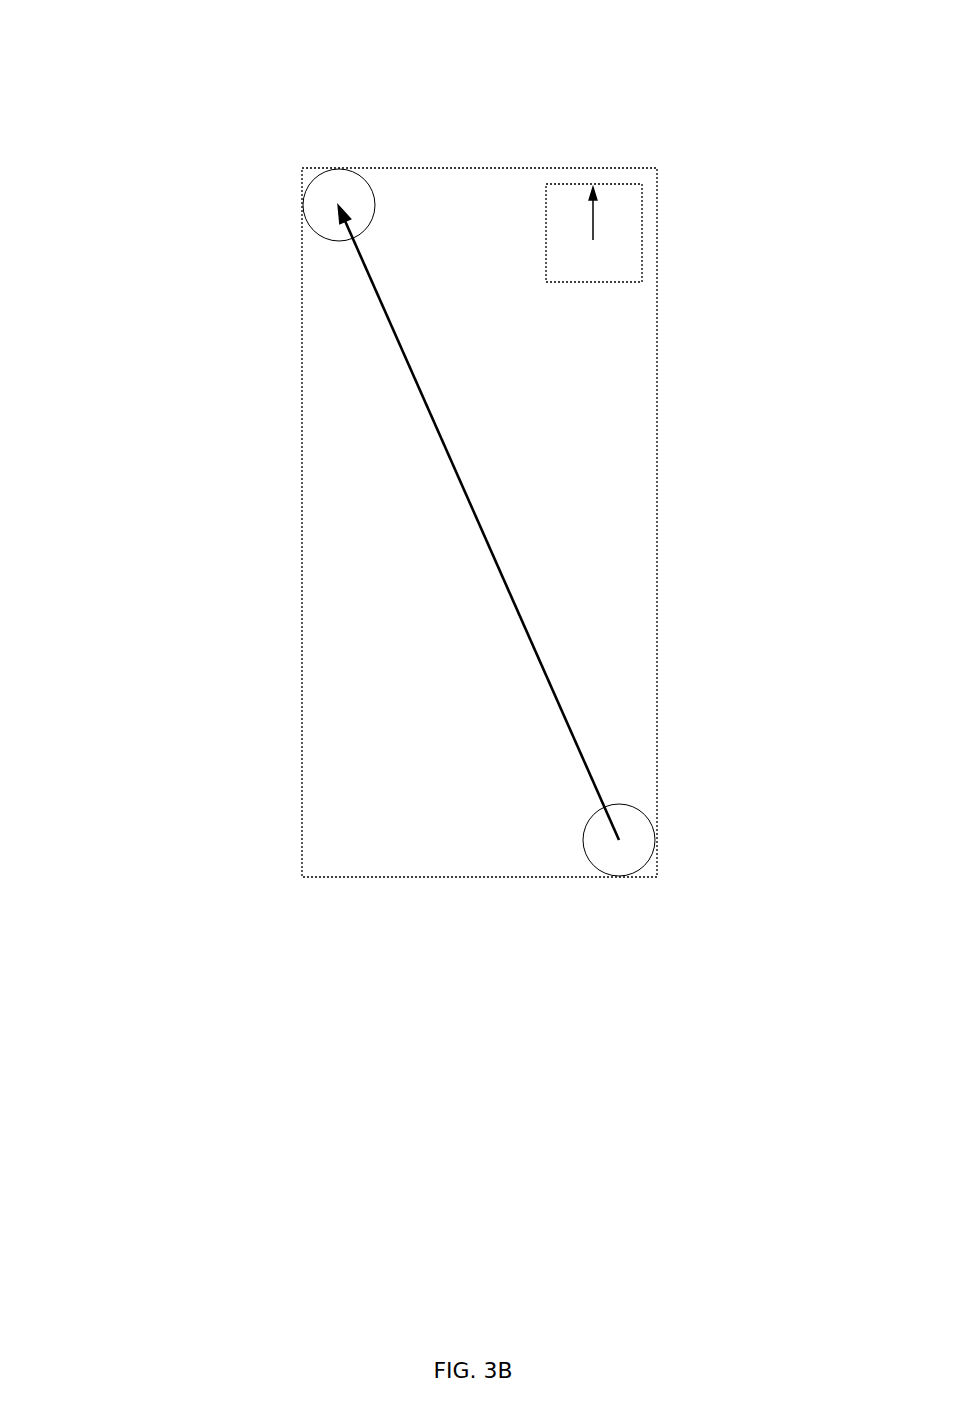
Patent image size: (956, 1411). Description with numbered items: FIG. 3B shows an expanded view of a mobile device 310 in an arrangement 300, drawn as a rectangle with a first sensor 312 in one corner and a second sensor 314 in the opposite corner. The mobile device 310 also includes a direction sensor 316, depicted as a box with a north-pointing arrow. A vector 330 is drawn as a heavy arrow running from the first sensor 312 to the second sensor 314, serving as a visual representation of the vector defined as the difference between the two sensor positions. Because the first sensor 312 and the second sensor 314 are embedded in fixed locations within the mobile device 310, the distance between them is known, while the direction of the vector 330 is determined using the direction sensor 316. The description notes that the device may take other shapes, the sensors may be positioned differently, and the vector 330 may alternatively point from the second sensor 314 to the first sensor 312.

The mobile device sensor arrangement 300 is at (135, 46).
The mobile device 310 is at (482, 168).
The first sensor 312 is at (617, 803).
The second sensor 314 is at (313, 232).
The direction sensor 316 is at (593, 283).
The vector 330 is at (482, 520).